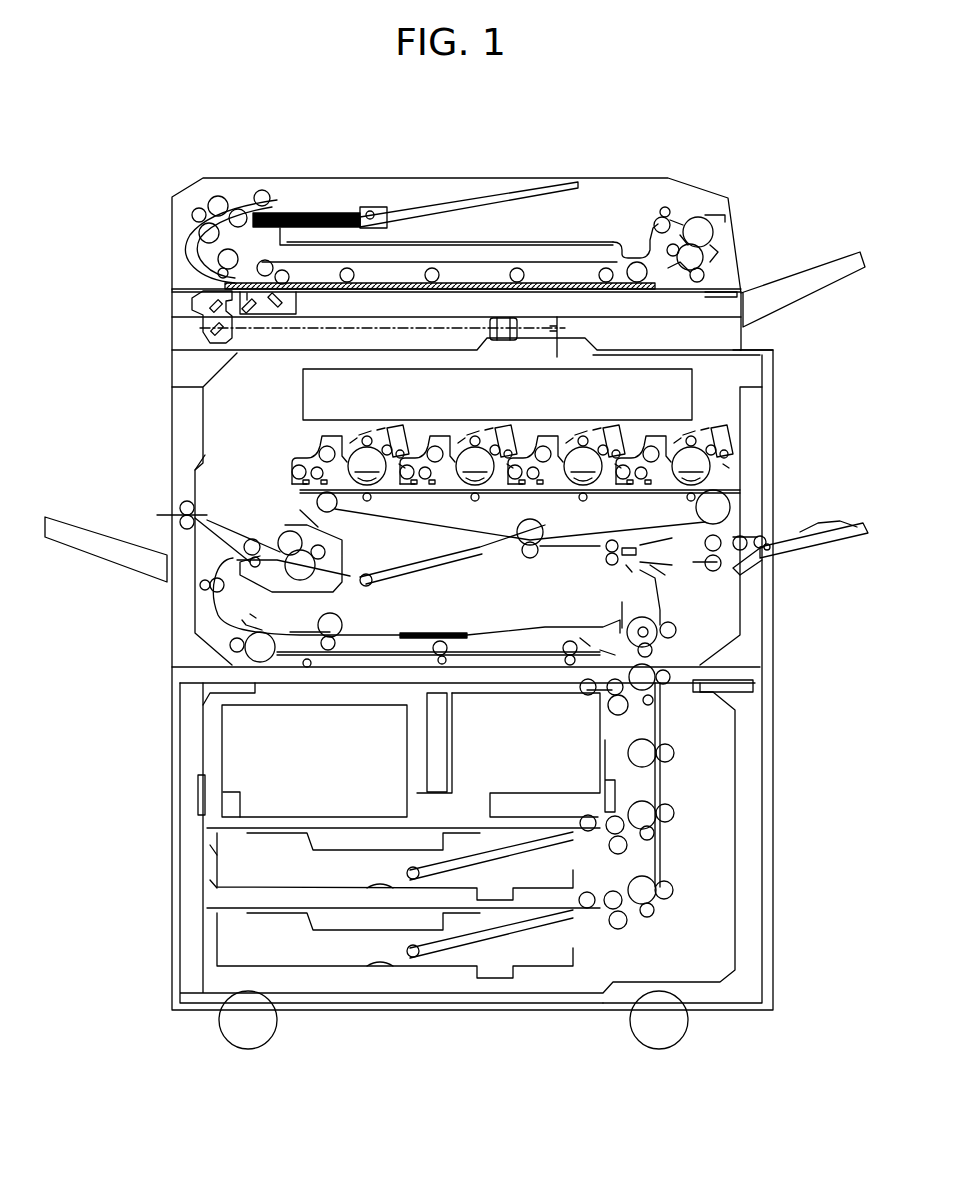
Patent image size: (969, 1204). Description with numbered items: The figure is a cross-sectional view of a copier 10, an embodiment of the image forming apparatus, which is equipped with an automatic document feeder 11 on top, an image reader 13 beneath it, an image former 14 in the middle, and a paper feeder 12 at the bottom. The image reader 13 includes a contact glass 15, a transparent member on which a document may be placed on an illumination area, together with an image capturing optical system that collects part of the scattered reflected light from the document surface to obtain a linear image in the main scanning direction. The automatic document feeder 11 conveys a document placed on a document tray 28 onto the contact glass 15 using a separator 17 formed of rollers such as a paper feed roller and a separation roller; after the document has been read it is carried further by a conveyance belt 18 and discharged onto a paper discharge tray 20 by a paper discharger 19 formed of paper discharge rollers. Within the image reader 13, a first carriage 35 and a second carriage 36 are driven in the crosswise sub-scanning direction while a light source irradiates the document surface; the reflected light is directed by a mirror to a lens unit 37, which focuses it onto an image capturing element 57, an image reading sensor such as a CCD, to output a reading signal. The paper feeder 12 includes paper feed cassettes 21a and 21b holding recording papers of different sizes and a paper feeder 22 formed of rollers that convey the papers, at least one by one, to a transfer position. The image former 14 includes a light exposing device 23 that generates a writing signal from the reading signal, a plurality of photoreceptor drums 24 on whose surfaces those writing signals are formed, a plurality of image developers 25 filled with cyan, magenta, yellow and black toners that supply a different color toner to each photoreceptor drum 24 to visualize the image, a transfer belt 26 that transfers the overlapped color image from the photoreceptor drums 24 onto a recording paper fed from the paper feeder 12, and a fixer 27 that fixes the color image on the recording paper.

The copier 10 is at (455, 165).
The automatic document feeder 11 is at (155, 250).
The paper feeder 12 is at (153, 836).
The image reader 13 is at (160, 333).
The image former 14 is at (152, 602).
The contact glass 15 is at (553, 282).
The separator 17 is at (205, 195).
The conveyance belt 18 is at (466, 265).
The paper discharger 19 is at (735, 228).
The paper discharge tray 20 is at (604, 238).
The paper feed cassette 21a is at (222, 897).
The paper feed cassette 21b is at (320, 980).
The paper feeder 22 is at (680, 786).
The light exposing device 23 is at (300, 392).
The photoreceptor drum 24 is at (529, 466).
The image developer 25 is at (395, 432).
The transfer belt 26 is at (412, 530).
The fixer 27 is at (270, 522).
The document tray 28 is at (508, 188).
The first carriage 35 is at (300, 296).
The second carriage 36 is at (238, 336).
The lens unit 37 is at (489, 310).
The image capturing element 57 is at (562, 328).